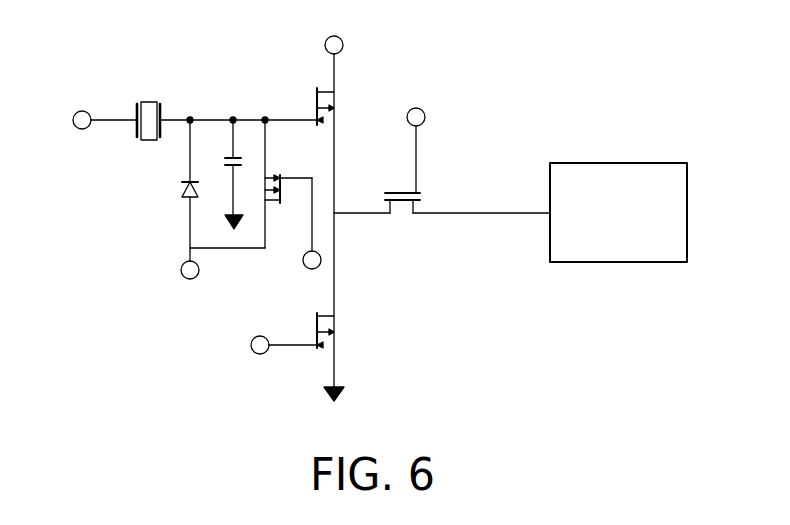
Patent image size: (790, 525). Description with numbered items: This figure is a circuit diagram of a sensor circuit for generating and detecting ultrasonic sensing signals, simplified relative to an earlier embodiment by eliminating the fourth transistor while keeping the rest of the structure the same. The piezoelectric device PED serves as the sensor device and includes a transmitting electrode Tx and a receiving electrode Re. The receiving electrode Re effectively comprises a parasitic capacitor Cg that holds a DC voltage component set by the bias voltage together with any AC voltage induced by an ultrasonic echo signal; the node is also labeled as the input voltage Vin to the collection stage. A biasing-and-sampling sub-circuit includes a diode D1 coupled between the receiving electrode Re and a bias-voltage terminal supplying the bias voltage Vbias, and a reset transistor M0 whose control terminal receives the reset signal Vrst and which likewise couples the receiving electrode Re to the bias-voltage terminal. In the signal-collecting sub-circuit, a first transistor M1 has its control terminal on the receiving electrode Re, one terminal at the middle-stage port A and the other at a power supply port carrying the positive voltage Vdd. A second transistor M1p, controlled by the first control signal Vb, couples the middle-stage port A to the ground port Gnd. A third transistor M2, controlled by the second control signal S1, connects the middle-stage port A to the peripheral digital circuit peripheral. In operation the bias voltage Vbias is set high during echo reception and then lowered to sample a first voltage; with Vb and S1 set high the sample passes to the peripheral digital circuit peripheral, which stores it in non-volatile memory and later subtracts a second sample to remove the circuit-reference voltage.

The transmitting electrode Tx is at (96, 125).
The piezoelectric device PED is at (146, 101).
The receiving electrode Re is at (238, 109).
The input voltage node Vin is at (232, 115).
The parasitic capacitor Cg is at (223, 174).
The diode D1 is at (175, 190).
The bias voltage Vbias is at (217, 277).
The first transistor M1 is at (298, 103).
The positive voltage Vdd is at (333, 32).
The reset transistor M0 is at (288, 185).
The reset signal Vrst is at (292, 269).
The middle-stage port A is at (362, 203).
The third transistor M2 is at (458, 190).
The second control signal S1 is at (424, 138).
The peripheral digital circuit peripheral is at (618, 212).
The second transistor M1p is at (301, 330).
The first control signal Vb is at (245, 346).
The ground port Gnd is at (330, 239).